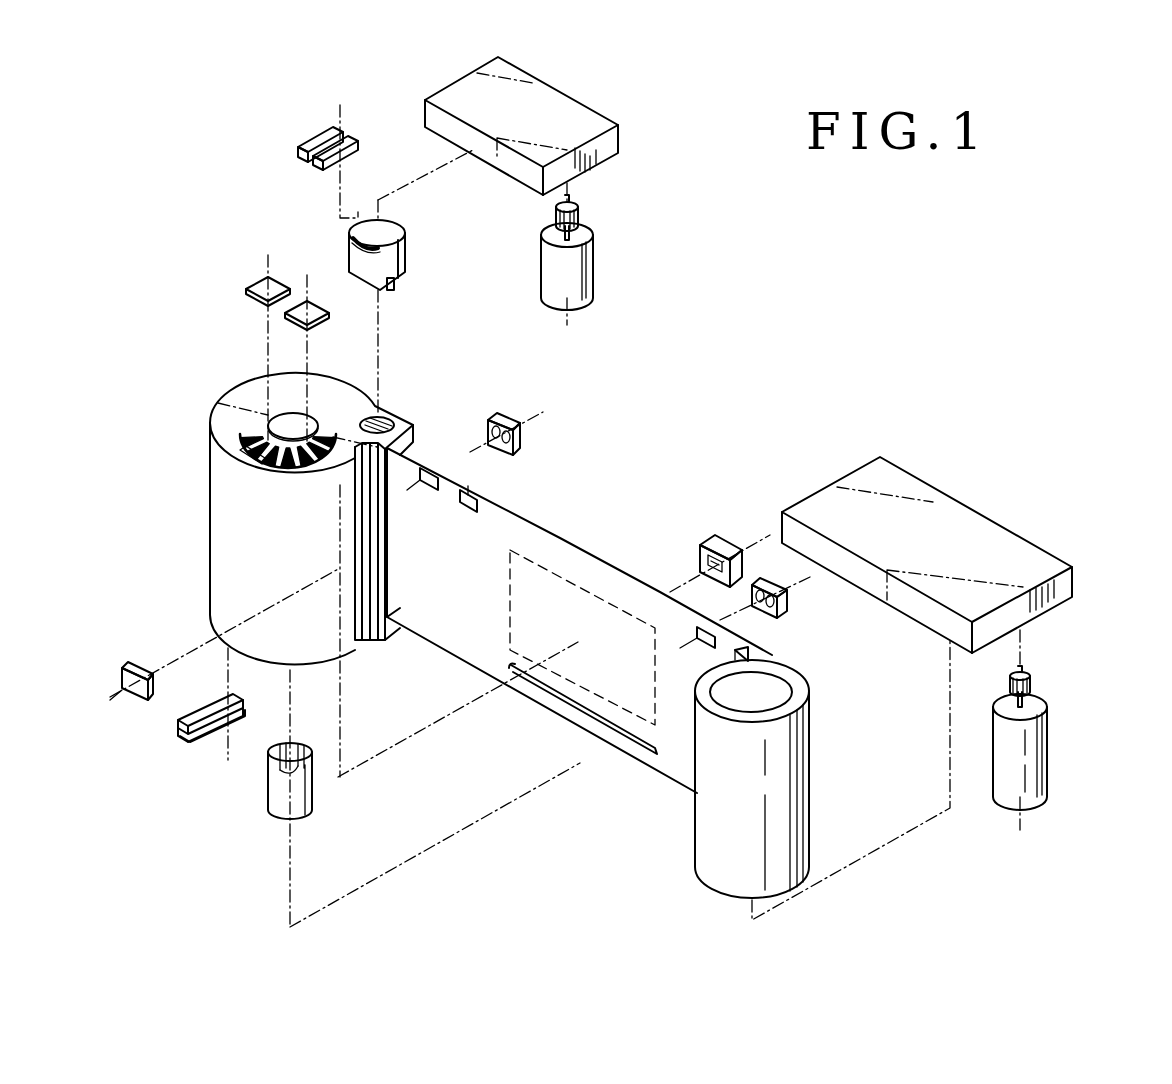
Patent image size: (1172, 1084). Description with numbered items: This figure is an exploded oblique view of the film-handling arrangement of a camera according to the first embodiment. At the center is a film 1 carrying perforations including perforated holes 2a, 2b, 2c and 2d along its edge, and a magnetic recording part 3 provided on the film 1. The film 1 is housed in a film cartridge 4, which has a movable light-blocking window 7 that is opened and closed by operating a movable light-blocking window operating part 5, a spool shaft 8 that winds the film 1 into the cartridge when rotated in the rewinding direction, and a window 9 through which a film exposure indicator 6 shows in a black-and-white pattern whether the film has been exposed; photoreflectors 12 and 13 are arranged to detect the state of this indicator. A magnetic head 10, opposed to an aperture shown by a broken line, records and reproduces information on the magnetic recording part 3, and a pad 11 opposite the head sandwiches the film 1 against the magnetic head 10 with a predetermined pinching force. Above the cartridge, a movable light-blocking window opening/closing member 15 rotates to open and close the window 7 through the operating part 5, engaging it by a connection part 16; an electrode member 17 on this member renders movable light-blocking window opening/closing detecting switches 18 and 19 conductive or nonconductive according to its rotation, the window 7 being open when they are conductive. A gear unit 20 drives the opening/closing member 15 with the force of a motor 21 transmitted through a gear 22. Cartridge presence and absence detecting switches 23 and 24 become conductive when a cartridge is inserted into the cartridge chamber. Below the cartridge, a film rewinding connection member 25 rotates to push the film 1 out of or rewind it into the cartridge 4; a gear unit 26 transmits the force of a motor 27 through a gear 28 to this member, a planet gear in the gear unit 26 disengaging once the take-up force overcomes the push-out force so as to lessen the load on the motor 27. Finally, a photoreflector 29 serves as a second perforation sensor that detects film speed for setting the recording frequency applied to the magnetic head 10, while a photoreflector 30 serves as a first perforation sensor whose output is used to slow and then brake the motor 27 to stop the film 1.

The film 1 is at (437, 647).
The perforated hole 2a is at (440, 465).
The perforated hole 2b is at (475, 490).
The perforated hole 2c is at (707, 627).
The perforated hole 2d is at (750, 645).
The magnetic recording part 3 is at (595, 720).
The film cartridge 4 is at (400, 436).
The movable light-blocking window operating part 5 is at (384, 412).
The film exposure indicator 6 is at (250, 470).
The movable light-blocking window 7 is at (425, 452).
The spool shaft 8 is at (312, 418).
The window 9 is at (240, 433).
The magnetic head 10 is at (716, 535).
The pad 11 is at (138, 660).
The photoreflector 12 is at (290, 318).
The photoreflector 13 is at (250, 292).
The movable light-blocking window opening/closing member 15 is at (406, 245).
The connection part 16 is at (396, 287).
The electrode member 17 is at (346, 246).
The movable light-blocking window opening/closing detecting switch 18 is at (325, 132).
The movable light-blocking window opening/closing detecting switch 19 is at (352, 140).
The gear unit 20 is at (570, 115).
The motor 21 is at (597, 262).
The gear 22 is at (583, 215).
The cartridge presence and absence detecting switch 23 is at (183, 722).
The cartridge presence and absence detecting switch 24 is at (205, 745).
The film rewinding connection member 25 is at (275, 772).
The gear unit 26 is at (912, 483).
The motor 27 is at (1048, 740).
The gear 28 is at (1032, 688).
The photoreflector 29 is at (505, 412).
The photoreflector 30 is at (788, 590).